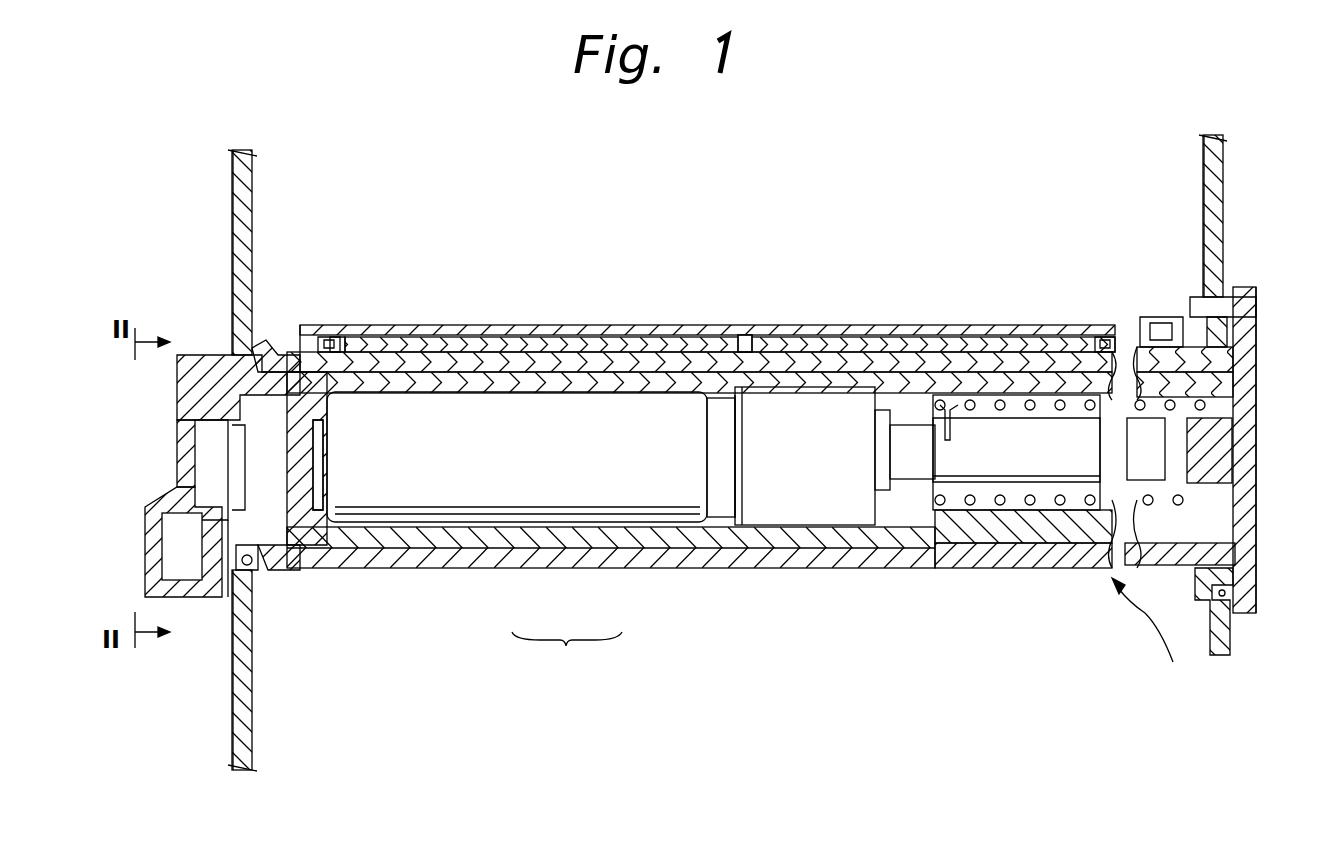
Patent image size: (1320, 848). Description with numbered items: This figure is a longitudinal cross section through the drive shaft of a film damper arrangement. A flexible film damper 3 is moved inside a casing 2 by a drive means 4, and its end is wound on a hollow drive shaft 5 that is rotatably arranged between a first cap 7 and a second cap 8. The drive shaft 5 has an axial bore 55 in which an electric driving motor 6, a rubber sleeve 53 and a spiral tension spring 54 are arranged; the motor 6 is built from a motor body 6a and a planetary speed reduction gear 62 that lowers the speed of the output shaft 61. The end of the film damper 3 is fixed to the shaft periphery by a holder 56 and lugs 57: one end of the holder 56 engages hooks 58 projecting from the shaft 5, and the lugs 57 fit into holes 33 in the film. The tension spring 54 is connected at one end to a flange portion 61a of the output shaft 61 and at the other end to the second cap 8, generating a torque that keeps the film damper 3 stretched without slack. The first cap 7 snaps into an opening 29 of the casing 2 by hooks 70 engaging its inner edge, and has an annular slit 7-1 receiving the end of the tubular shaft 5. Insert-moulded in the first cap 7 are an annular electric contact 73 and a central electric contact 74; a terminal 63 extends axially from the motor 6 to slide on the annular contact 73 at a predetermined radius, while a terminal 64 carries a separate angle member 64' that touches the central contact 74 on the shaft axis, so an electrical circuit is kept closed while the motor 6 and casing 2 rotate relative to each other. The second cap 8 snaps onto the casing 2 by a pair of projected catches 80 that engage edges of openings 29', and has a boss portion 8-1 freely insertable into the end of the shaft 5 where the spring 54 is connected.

The casing 2 is at (232, 230).
The film damper 3 is at (870, 352).
The drive means 4 is at (1147, 638).
The drive shaft 5 is at (898, 568).
The electric driving motor 6 is at (576, 678).
The motor body 6a is at (545, 480).
The first cap 7 is at (192, 597).
The annular slit 7-1 is at (232, 600).
The second cap 8 is at (1250, 518).
The boss portion 8-1 is at (1212, 452).
The opening 29 is at (283, 599).
The openings 29' is at (1252, 490).
The holes 33 is at (438, 337).
The sleeve 53 is at (720, 540).
The spiral tension spring 54 is at (965, 512).
The axial bore 55 is at (825, 545).
The holder 56 is at (697, 325).
The lugs 57 is at (750, 335).
The hooks 58 is at (330, 340).
The output shaft 61 is at (1048, 470).
The flange portion 61a is at (949, 440).
The speed reduction gear 62 is at (745, 457).
The terminal 63 is at (250, 355).
The terminal 64 is at (340, 489).
The angle member 64' is at (359, 465).
The hooks 70 is at (270, 340).
The annular electric contact 73 is at (232, 405).
The central electric contact 74 is at (238, 460).
The projected catches 80 is at (1203, 312).